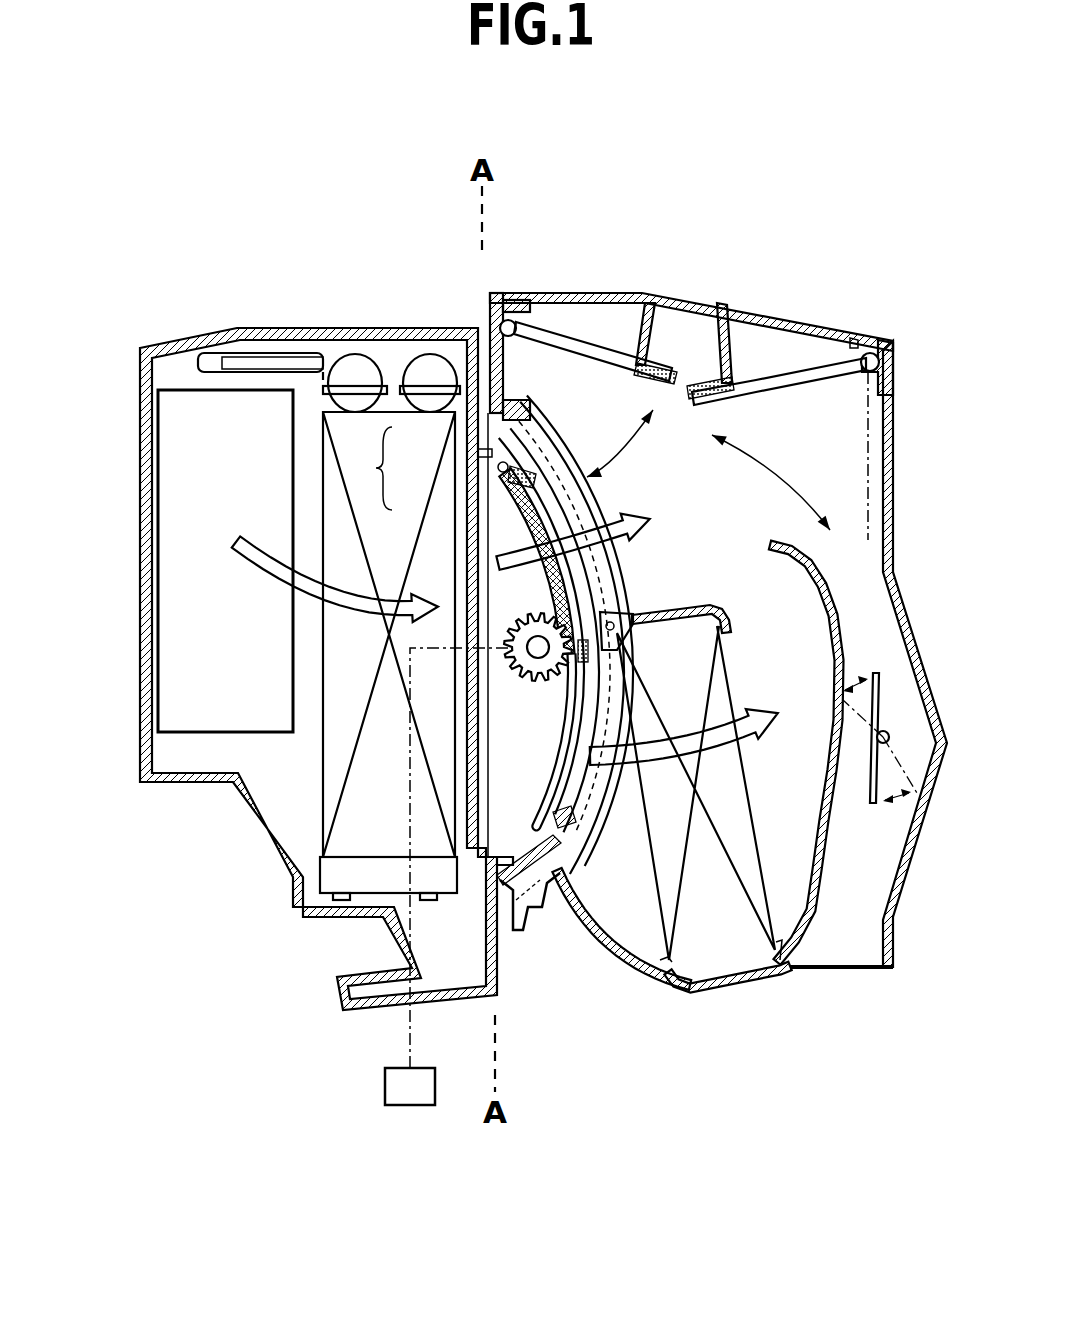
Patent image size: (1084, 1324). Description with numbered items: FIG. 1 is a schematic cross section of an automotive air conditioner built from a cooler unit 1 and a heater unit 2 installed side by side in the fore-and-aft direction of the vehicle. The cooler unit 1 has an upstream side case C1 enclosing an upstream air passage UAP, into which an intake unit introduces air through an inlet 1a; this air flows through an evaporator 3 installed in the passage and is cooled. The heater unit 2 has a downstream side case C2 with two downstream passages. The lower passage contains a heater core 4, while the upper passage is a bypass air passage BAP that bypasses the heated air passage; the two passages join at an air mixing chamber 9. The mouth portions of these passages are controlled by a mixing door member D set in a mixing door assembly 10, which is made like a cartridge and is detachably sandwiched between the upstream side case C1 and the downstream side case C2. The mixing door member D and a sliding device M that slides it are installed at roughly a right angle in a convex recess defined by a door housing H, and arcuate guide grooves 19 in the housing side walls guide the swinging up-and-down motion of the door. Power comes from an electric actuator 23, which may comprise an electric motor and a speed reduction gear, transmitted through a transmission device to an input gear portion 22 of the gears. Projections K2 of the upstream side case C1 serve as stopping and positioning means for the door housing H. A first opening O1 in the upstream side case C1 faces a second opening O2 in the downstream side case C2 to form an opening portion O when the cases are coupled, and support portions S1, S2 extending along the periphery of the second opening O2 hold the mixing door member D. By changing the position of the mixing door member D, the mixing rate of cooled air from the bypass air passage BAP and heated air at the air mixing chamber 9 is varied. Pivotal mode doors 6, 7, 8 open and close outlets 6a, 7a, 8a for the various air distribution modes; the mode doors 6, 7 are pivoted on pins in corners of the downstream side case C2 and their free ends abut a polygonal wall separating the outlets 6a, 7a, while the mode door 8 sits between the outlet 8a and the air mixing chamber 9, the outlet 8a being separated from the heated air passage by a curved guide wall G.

The cooler unit 1 is at (310, 294).
The upstream side case C1 is at (207, 328).
The inlet 1a is at (158, 530).
The evaporator 3 is at (352, 820).
The upstream air passage UAP is at (270, 752).
The electric actuator 23 is at (410, 1105).
The opening portion O is at (429, 468).
The first opening O1 is at (478, 453).
The second opening O2 is at (498, 467).
The heater unit 2 is at (718, 273).
The downstream side case C2 is at (893, 420).
The mode door 6 is at (557, 333).
The outlet 6a is at (618, 300).
The mode door 7 is at (818, 370).
The outlet 7a is at (780, 328).
The bypass air passage BAP is at (570, 450).
The support portion S1 is at (503, 377).
The support portion S2 is at (537, 887).
The air mixing chamber 9 is at (703, 512).
The curved guide wall G is at (830, 863).
The mode door 8 is at (880, 683).
The outlet 8a is at (847, 967).
The heater core 4 is at (728, 948).
The guide groove 19 is at (551, 776).
The mixing door member D is at (528, 508).
The projection K2 is at (505, 857).
The input gear portion 22 is at (530, 618).
The sliding device M is at (537, 700).
The mixing door assembly 10 is at (530, 960).
The door housing H is at (503, 792).